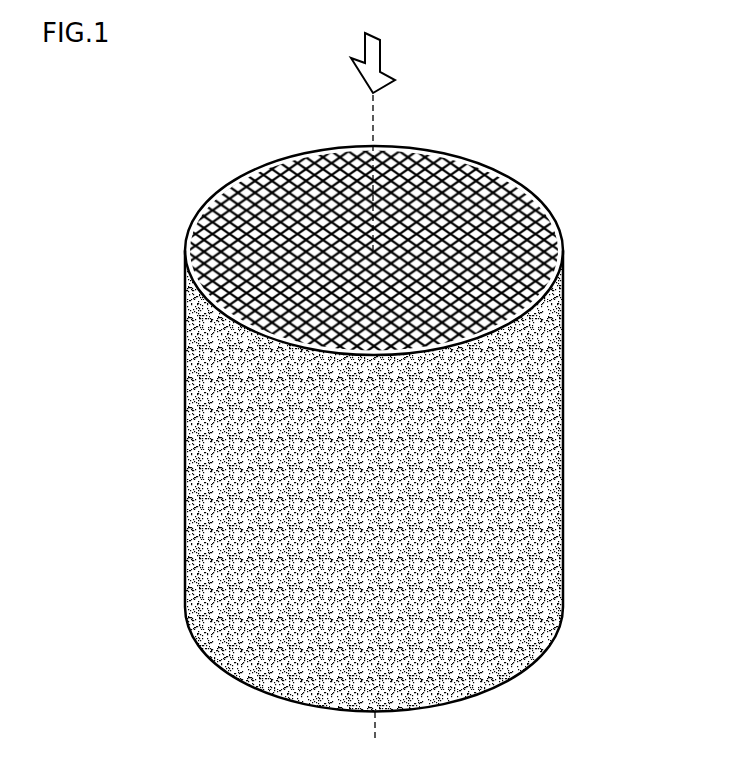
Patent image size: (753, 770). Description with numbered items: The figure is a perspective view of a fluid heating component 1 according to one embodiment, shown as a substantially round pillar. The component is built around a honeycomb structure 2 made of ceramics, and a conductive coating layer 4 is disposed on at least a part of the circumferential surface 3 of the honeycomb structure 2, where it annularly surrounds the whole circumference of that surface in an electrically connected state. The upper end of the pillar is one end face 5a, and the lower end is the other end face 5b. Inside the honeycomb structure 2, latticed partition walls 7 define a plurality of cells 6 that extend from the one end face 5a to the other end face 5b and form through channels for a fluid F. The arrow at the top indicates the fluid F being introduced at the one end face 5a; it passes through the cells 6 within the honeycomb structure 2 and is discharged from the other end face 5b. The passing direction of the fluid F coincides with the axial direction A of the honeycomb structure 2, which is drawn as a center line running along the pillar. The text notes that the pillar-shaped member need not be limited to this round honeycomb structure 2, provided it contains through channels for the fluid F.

The fluid heating component 1 is at (394, 442).
The honeycomb structure 2 is at (374, 239).
The circumferential surface 3 is at (183, 267).
The conductive coating layer 4 is at (192, 488).
The one end face 5a is at (350, 239).
The other end face 5b is at (528, 667).
The cells 6 is at (243, 182).
The partition walls 7 is at (362, 239).
The axial direction A is at (378, 108).
The fluid F is at (381, 41).